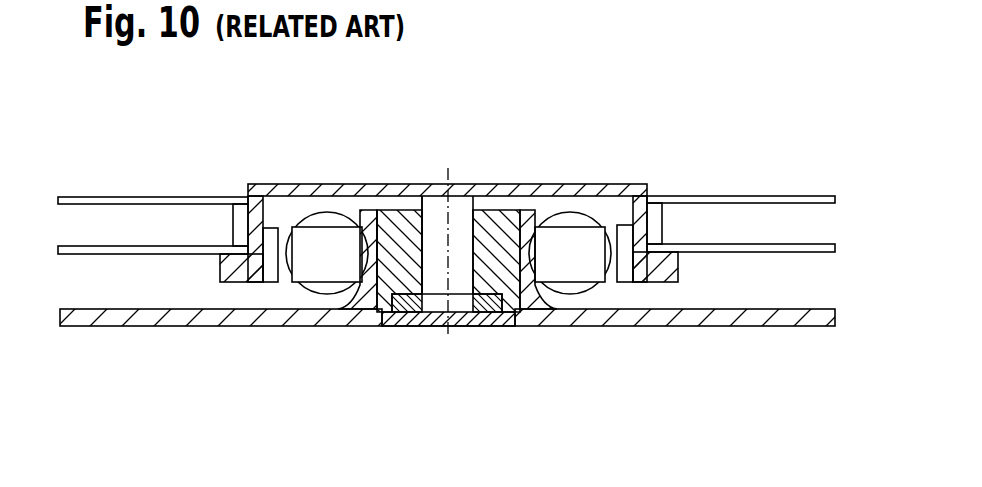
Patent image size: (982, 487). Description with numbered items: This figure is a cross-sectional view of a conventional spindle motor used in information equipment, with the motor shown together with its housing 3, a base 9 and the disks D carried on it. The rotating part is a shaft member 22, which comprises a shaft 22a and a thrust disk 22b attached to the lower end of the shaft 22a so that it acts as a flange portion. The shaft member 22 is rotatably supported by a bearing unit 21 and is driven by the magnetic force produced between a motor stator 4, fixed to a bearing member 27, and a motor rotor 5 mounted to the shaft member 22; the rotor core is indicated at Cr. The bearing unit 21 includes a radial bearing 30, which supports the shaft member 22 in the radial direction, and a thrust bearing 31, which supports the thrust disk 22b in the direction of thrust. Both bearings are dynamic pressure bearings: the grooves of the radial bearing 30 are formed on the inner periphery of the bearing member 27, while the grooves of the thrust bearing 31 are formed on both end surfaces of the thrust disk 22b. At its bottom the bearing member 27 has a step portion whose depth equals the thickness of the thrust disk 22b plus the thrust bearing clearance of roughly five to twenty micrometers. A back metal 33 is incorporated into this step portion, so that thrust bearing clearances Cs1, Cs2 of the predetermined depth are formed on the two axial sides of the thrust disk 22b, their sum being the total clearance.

The housing 3 is at (627, 184).
The disks D is at (796, 196).
The base plate 9 is at (98, 327).
The motor stator 4 is at (590, 266).
The motor rotor 5 is at (625, 283).
The radial bearing 30 is at (368, 212).
The rotor core Cr is at (410, 252).
The bearing member 27 is at (502, 222).
The shaft member 22 is at (456, 213).
The shaft 22a is at (433, 205).
The thrust disk 22b is at (490, 310).
The back metal 33 is at (466, 327).
The thrust bearing 31 is at (477, 302).
The bearing unit 21 is at (428, 327).
The thrust bearing clearance Cs1 is at (378, 266).
The thrust bearing clearance Cs2 is at (400, 305).